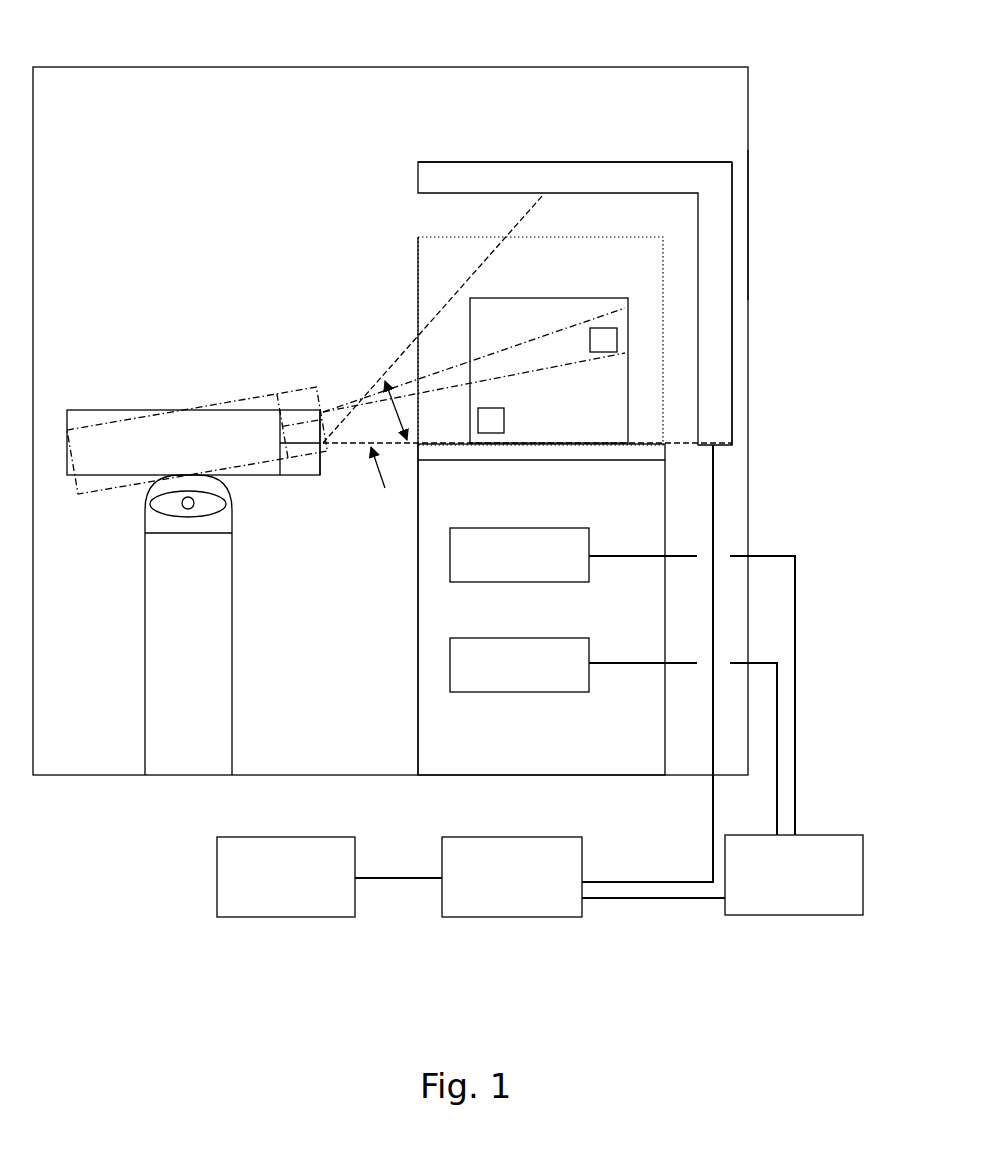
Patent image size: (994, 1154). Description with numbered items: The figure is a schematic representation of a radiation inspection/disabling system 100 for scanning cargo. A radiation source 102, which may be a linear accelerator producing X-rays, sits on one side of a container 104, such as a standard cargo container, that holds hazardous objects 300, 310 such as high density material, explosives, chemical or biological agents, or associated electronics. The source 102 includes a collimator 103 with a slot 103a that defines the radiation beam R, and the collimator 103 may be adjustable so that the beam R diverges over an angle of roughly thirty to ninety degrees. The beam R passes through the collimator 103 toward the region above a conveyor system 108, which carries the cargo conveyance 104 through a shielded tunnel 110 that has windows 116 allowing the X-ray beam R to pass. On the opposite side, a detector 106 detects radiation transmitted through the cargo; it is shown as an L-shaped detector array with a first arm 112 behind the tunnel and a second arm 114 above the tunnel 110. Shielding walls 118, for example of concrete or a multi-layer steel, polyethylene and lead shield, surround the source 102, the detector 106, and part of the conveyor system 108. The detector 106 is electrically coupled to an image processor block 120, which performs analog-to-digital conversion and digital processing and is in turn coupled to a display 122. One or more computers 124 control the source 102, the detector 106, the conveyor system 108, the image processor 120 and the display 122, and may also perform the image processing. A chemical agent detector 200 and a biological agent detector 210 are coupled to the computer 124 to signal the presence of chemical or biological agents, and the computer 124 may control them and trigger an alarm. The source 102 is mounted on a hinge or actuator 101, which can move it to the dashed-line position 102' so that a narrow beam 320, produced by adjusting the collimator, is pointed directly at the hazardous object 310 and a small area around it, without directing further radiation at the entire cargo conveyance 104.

The radiation inspection/disabling system 100 is at (386, 24).
The hinge or actuator 101 is at (195, 505).
The radiation source 102 is at (193, 424).
The position of the radiation source 102' is at (197, 429).
The collimator 103 is at (310, 410).
The slot 103a is at (297, 475).
The container 104 is at (527, 298).
The detector 106 is at (720, 157).
The conveyor system 108 is at (548, 462).
The shielded tunnel 110 is at (418, 307).
The first arm 112 is at (732, 297).
The second arm 114 is at (490, 162).
The windows 116 is at (573, 238).
The shielding walls 118 is at (790, 217).
The image processor block 120 is at (492, 915).
The display 122 is at (262, 915).
The computer 124 is at (760, 915).
The chemical agent detector 200 is at (543, 582).
The biological agent detector 210 is at (543, 692).
The hazardous object 300 is at (504, 425).
The hazardous object 310 is at (617, 340).
The narrow beam 320 is at (517, 378).
The radiation beam R is at (386, 473).